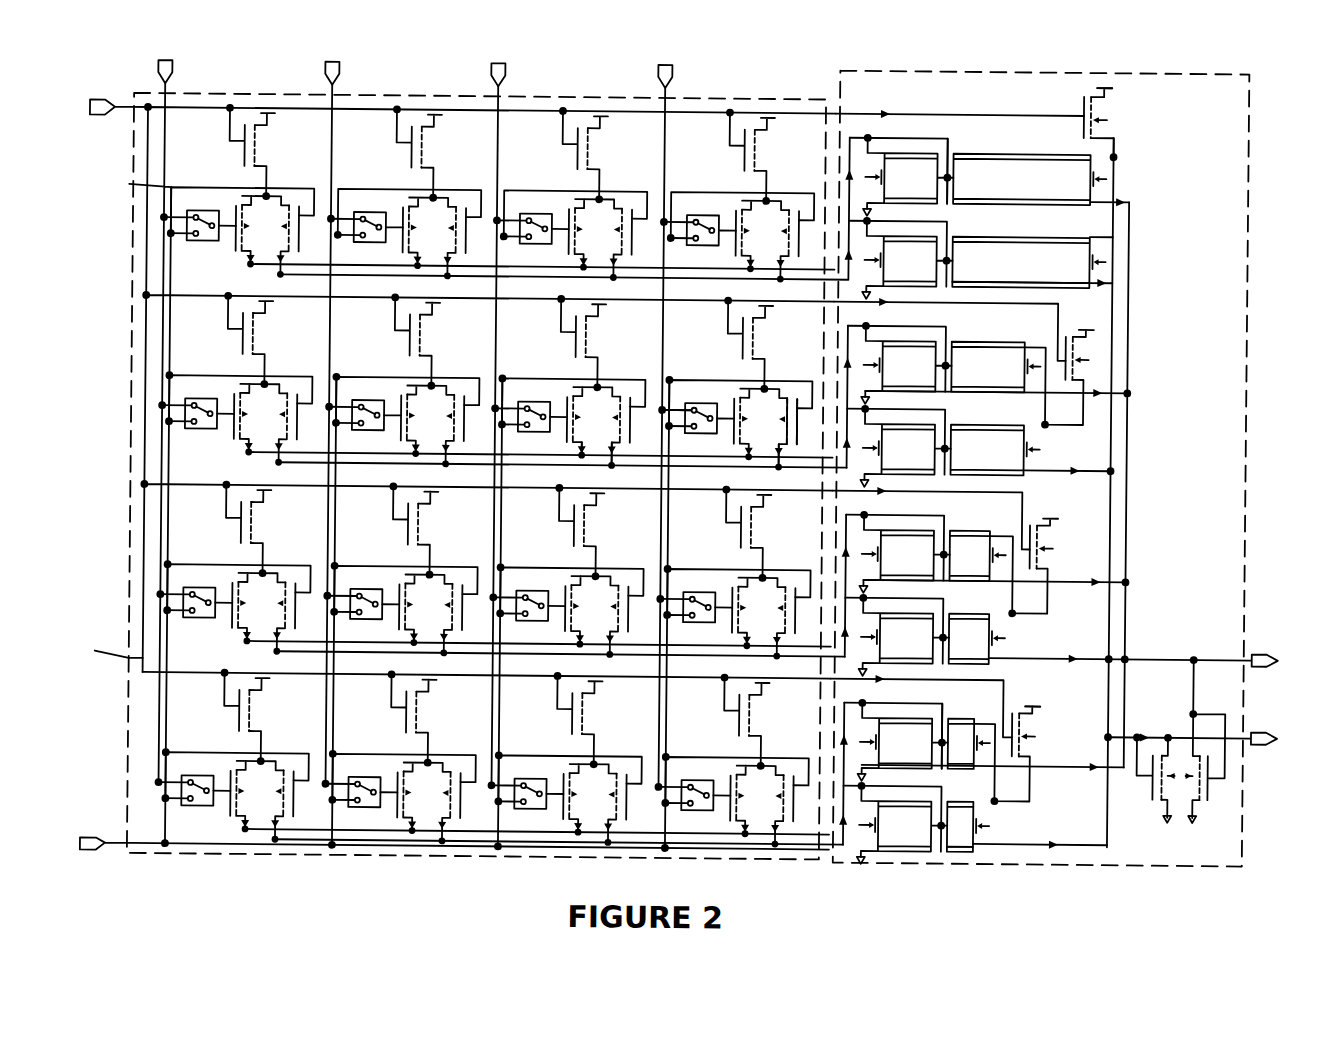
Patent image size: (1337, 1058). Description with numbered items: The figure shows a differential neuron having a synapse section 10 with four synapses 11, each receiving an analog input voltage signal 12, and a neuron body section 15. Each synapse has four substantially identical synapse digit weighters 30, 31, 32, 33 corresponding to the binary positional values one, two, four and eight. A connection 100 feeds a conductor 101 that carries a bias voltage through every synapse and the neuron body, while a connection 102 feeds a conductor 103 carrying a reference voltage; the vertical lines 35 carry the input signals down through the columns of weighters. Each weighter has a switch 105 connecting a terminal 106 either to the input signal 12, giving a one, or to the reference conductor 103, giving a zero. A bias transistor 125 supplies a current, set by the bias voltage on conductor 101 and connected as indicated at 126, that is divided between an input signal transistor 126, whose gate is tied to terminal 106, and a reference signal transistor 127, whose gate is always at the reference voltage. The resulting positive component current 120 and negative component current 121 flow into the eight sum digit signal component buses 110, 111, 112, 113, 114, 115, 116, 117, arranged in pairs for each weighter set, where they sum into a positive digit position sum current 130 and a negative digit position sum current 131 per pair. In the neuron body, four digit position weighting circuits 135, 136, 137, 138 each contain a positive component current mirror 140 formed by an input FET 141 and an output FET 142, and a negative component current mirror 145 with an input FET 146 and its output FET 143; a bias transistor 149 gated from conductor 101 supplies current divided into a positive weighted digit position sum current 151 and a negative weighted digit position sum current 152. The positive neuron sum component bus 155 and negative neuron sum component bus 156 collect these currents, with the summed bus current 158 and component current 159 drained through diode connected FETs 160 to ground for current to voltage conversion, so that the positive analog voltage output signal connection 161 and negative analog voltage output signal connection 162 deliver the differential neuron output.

The synapse section 10 is at (128, 151).
The synapse 11 is at (216, 858).
The analog input voltage signal 12 is at (157, 70).
The neuron body section 15 is at (1250, 203).
The synapse digit weighter 30 is at (241, 717).
The synapse digit weighter 31 is at (243, 531).
The synapse digit weighter 32 is at (243, 342).
The synapse digit weighter 33 is at (243, 150).
The bit line 35 is at (132, 187).
The connection 100 is at (90, 101).
The conductor 101 is at (248, 296).
The connection 102 is at (362, 700).
The conductor 103 is at (186, 186).
The switch 105 is at (210, 243).
The terminal 106 is at (712, 440).
The sum digit signal component bus 110 is at (296, 826).
The sum digit signal component bus 111 is at (490, 832).
The sum digit signal component bus 112 is at (382, 640).
The sum digit signal component bus 113 is at (360, 650).
The sum digit signal component bus 114 is at (382, 451).
The sum digit signal component bus 115 is at (360, 461).
The sum digit signal component bus 116 is at (556, 263).
The sum digit signal component bus 117 is at (556, 274).
The positive component current 120 is at (582, 453).
The negative component current 121 is at (612, 462).
The bias transistor 125 is at (758, 318).
The input signal transistor 126 is at (735, 400).
The reference signal transistor 127 is at (790, 398).
The positive digit position sum current 130 is at (946, 582).
The negative digit position sum current 131 is at (860, 630).
The digit position weighting circuit 135 is at (1044, 724).
The digit position weighting circuit 136 is at (996, 592).
The digit position weighting circuit 137 is at (1072, 409).
The digit position weighting circuit 138 is at (1128, 158).
The positive component current mirror 140 is at (952, 153).
The input FET 141 is at (922, 146).
The output FET 142 is at (1040, 161).
The capacitor 143 is at (1030, 238).
The negative component current mirror 145 is at (946, 286).
The input FET 146 is at (920, 240).
The bias transistor 149 is at (1110, 94).
The positive weighted digit position sum current 151 is at (1094, 386).
The negative weighted digit position sum current 152 is at (1076, 465).
The positive neuron sum component bus 155 is at (1131, 290).
The negative neuron sum component bus 156 is at (1118, 542).
The output line 158 is at (1150, 656).
The neuron sum signal current 159 is at (1152, 736).
The diode connected FET 160 is at (1172, 814).
The positive analog voltage output signal connection 161 is at (1262, 645).
The negative analog voltage output signal connection 162 is at (1270, 723).